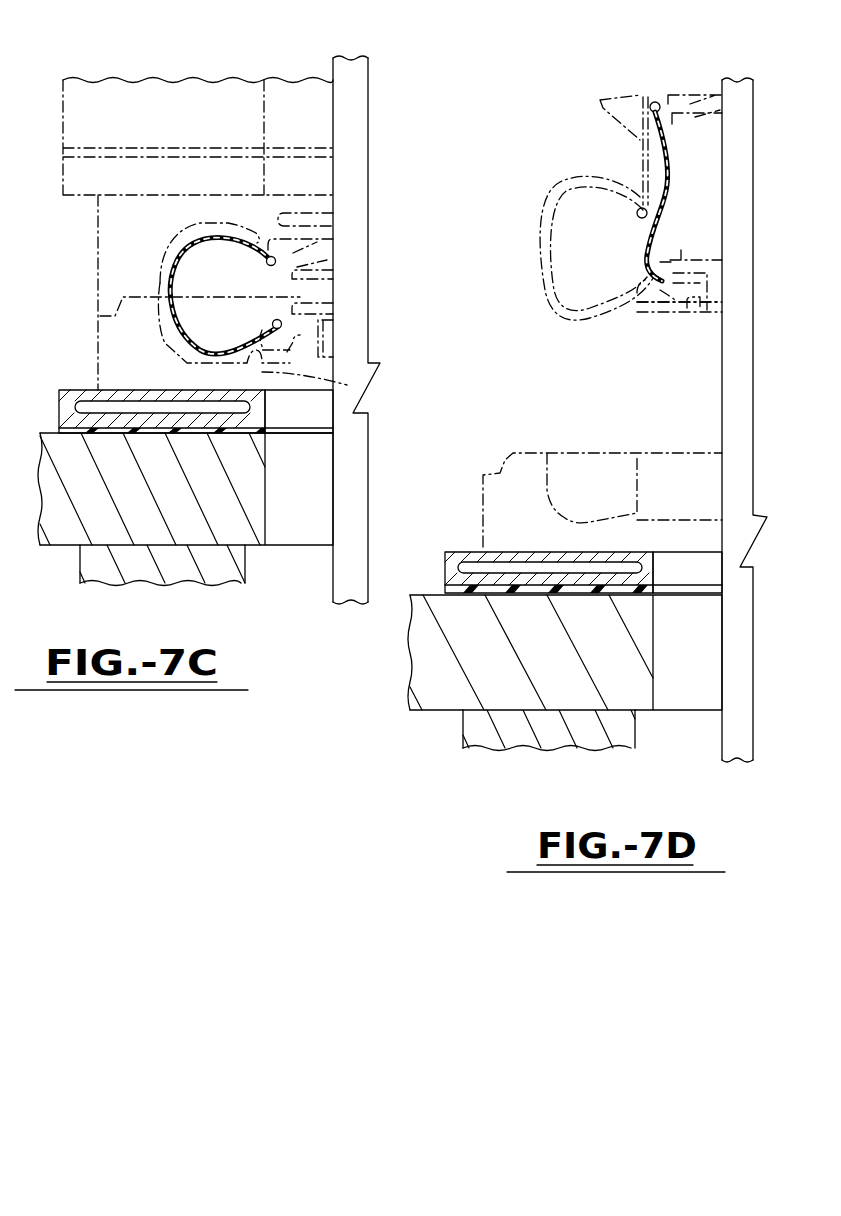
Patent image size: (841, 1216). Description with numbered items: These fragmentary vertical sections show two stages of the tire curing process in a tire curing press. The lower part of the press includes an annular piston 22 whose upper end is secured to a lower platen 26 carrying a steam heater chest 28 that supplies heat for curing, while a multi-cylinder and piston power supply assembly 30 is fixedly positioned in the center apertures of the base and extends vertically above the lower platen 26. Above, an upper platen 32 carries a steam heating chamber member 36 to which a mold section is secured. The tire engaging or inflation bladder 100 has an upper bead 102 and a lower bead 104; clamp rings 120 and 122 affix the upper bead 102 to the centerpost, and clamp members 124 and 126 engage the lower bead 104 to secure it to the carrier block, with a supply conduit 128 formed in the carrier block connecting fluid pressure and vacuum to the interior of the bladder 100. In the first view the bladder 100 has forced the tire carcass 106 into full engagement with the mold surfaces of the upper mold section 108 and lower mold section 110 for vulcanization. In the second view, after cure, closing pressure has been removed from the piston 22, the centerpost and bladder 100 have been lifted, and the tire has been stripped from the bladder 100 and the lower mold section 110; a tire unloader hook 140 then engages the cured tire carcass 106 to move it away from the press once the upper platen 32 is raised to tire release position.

In FIG. 7C, the annular piston 22 is at (205, 578).
In FIG. 7D, the annular piston 22 is at (472, 733).
In FIG. 7C, the lower platen 26 is at (253, 533).
In FIG. 7D, the lower platen 26 is at (420, 667).
In FIG. 7C, the steam heater chest 28 is at (85, 390).
In FIG. 7D, the steam heater chest 28 is at (468, 552).
In FIG. 7C, the multi-cylinder and piston power supply assembly 30 is at (347, 58).
In FIG. 7D, the multi-cylinder and piston power supply assembly 30 is at (737, 78).
In FIG. 7C, the upper platen 32 is at (150, 97).
In FIG. 7C, the steam heating chamber member 36 is at (80, 187).
In FIG. 7C, the tire engaging or inflation bladder 100 is at (196, 350).
In FIG. 7D, the tire engaging or inflation bladder 100 is at (668, 199).
In FIG. 7C, the upper bead 102 is at (266, 265).
In FIG. 7D, the upper bead 102 is at (655, 100).
In FIG. 7C, the lower bead 104 is at (270, 323).
In FIG. 7C, the tire carcass 106 is at (160, 283).
In FIG. 7D, the tire carcass 106 is at (540, 210).
In FIG. 7C, the upper mold section 108 is at (98, 257).
In FIG. 7C, the lower mold section 110 is at (98, 320).
In FIG. 7D, the lower mold section 110 is at (533, 452).
In FIG. 7C, the clamp ring 120 is at (333, 211).
In FIG. 7C, the clamp ring 122 is at (293, 278).
In FIG. 7D, the clamp ring 122 is at (676, 133).
In FIG. 7C, the clamp member 124 is at (300, 301).
In FIG. 7D, the clamp member 124 is at (681, 250).
In FIG. 7C, the clamp member 126 is at (347, 385).
In FIG. 7D, the clamp member 126 is at (640, 330).
In FIG. 7C, the supply conduit 128 is at (328, 343).
In FIG. 7D, the supply conduit 128 is at (710, 320).
In FIG. 7D, the tire unloader hook 140 is at (610, 118).